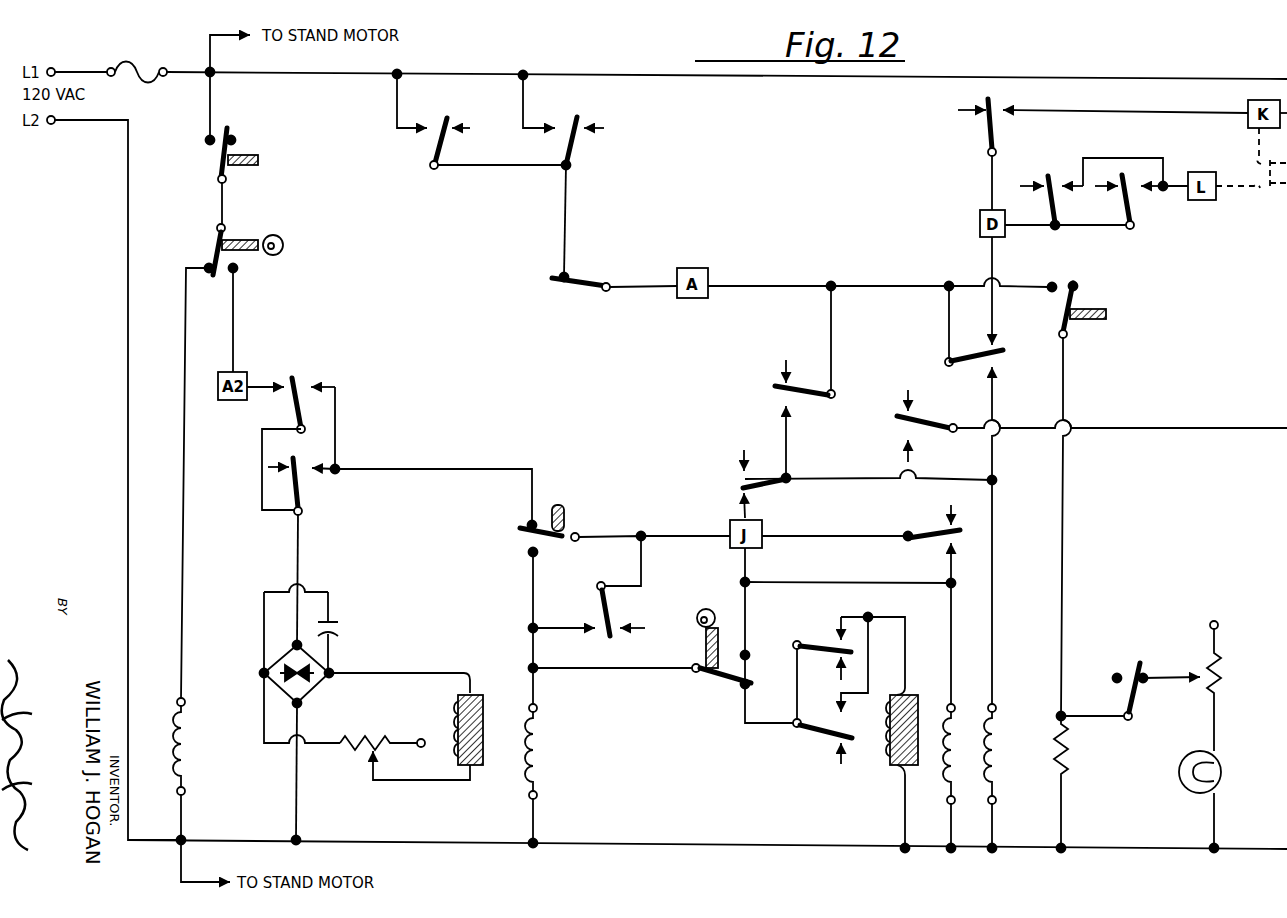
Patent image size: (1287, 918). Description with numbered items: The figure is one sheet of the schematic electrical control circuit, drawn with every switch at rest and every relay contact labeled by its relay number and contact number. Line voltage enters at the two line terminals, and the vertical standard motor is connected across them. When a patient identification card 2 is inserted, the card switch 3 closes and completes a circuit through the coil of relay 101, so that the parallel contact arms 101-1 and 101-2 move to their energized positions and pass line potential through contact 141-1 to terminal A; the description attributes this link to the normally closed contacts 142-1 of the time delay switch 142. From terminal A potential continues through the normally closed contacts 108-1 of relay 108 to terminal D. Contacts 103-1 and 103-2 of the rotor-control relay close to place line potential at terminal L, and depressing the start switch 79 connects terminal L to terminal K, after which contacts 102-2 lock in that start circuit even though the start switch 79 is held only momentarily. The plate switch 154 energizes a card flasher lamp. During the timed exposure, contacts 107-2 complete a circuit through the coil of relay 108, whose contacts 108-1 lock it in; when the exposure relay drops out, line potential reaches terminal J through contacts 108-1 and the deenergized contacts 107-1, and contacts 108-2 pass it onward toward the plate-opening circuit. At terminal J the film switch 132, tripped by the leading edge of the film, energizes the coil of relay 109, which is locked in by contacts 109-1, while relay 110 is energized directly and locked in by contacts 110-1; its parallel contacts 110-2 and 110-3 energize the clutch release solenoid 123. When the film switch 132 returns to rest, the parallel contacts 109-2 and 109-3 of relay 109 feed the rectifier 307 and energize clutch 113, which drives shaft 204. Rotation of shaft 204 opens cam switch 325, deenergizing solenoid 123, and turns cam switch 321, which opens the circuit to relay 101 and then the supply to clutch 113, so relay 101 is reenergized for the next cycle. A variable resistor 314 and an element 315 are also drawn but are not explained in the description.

The patient identification card 2 is at (252, 156).
The card switch 3 is at (216, 150).
The cam switch 321 is at (210, 262).
The shaft 204 is at (283, 241).
The relay 101 is at (184, 746).
The contact 01 of relay 101 101-1 is at (432, 134).
The contact 02 of relay 101 101-2 is at (567, 125).
The switch contact 141-1 is at (584, 277).
The contacts 02 of relay 102 102-2 is at (998, 113).
The start switch 79 is at (1258, 178).
The contacts 01 of relay 103 103-1 is at (1058, 188).
The contacts 02 of relay 103 103-2 is at (1135, 192).
The plate switch 154 is at (1063, 283).
The contacts 01 of relay 108 108-1 is at (997, 366).
The contacts 02 of relay 108 108-2 is at (903, 425).
The contacts 01 of relay 107 107-1 is at (740, 481).
The contacts 02 of relay 107 107-2 is at (790, 391).
The contacts 03 of relay 109 109-3 is at (296, 379).
The contacts 02 of relay 109 109-2 is at (306, 473).
The contacts 01 of relay 109 109-1 is at (603, 621).
The relay 109 is at (535, 738).
The film switch 132 is at (536, 533).
The cam switch 325 is at (727, 681).
The rectifier bridge 307 is at (305, 682).
The variable resistor 314 is at (374, 747).
The clutch 113 is at (463, 698).
The contacts 01 of relay 110 110-1 is at (946, 545).
The contacts 02 of relay 110 110-2 is at (838, 641).
The contacts 03 of relay 110 110-3 is at (852, 742).
The clutch release solenoid 123 is at (915, 698).
The relay 110 is at (955, 738).
The relay 108 is at (996, 738).
The time delay switch 142 is at (1063, 760).
The contacts 01 of time delay switch 142 142-1 is at (1129, 671).
The variable resistor and lamp 315 is at (1219, 672).